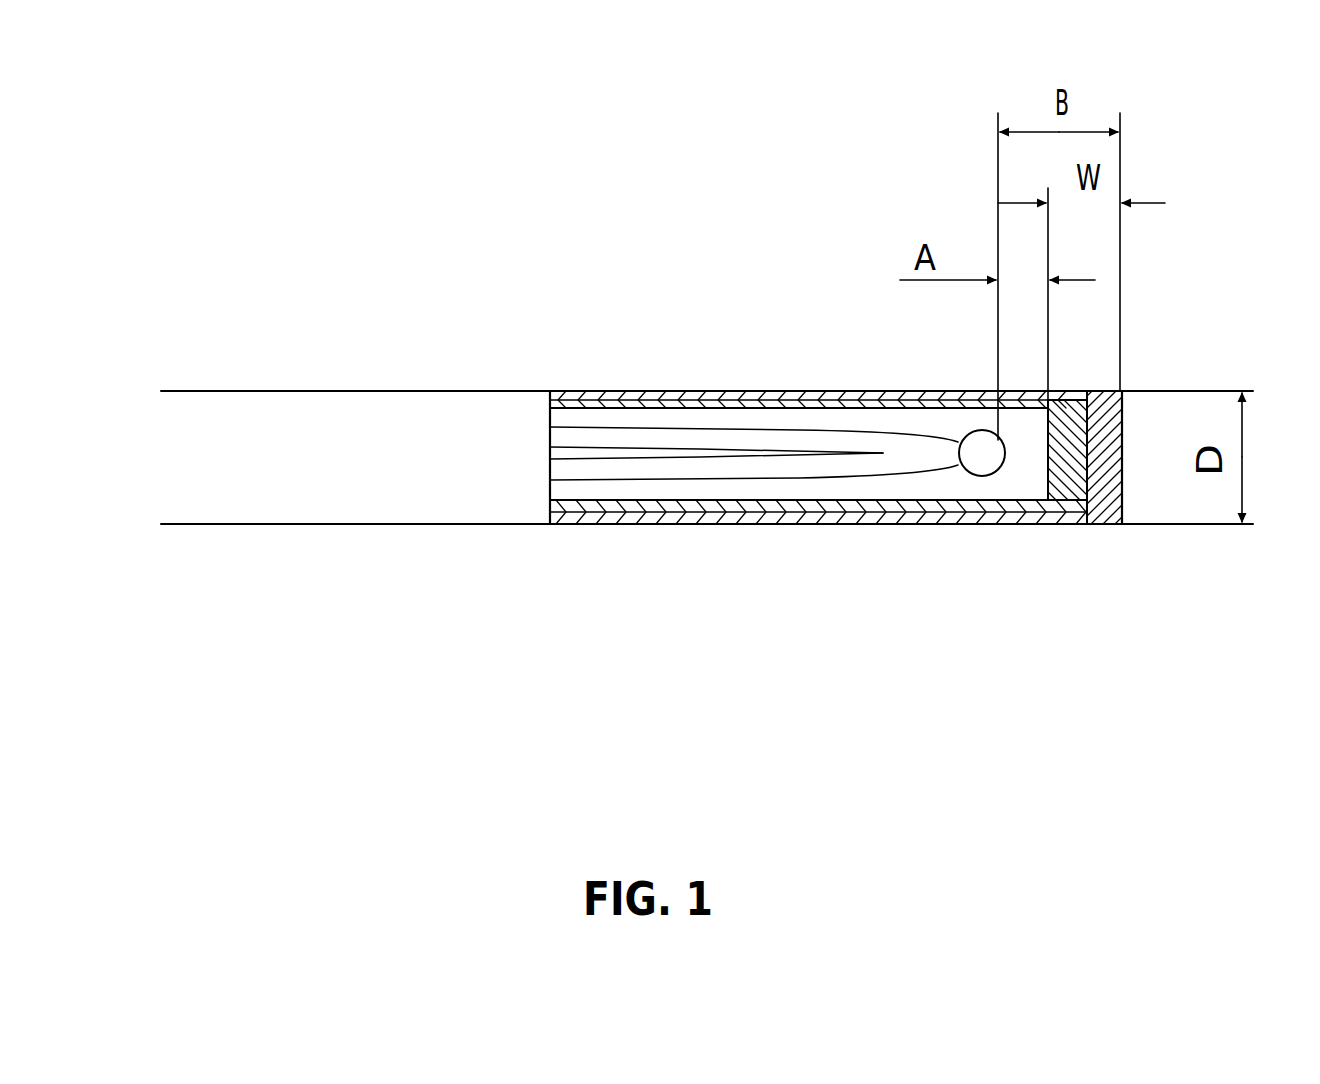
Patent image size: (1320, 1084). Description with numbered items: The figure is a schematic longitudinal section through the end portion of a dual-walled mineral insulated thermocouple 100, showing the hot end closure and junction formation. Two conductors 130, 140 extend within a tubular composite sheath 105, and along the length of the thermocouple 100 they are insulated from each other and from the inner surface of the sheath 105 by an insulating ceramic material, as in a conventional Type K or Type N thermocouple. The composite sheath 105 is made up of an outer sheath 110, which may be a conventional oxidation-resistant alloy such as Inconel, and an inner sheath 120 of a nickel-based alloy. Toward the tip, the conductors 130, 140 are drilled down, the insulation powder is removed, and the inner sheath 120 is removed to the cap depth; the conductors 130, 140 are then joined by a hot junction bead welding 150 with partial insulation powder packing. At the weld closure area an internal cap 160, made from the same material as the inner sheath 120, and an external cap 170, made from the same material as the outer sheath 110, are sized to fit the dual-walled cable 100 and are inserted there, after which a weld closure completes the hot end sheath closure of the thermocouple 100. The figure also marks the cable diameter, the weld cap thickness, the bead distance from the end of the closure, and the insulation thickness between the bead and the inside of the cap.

The thermocouple 100 is at (413, 316).
The composite sheath 105 is at (341, 452).
The outer sheath 110 is at (748, 517).
The inner sheath 120 is at (872, 503).
The conductor 130 is at (723, 433).
The conductor 140 is at (612, 473).
The hot junction bead welding 150 is at (980, 451).
The internal cap 160 is at (1068, 468).
The external cap 170 is at (1102, 465).